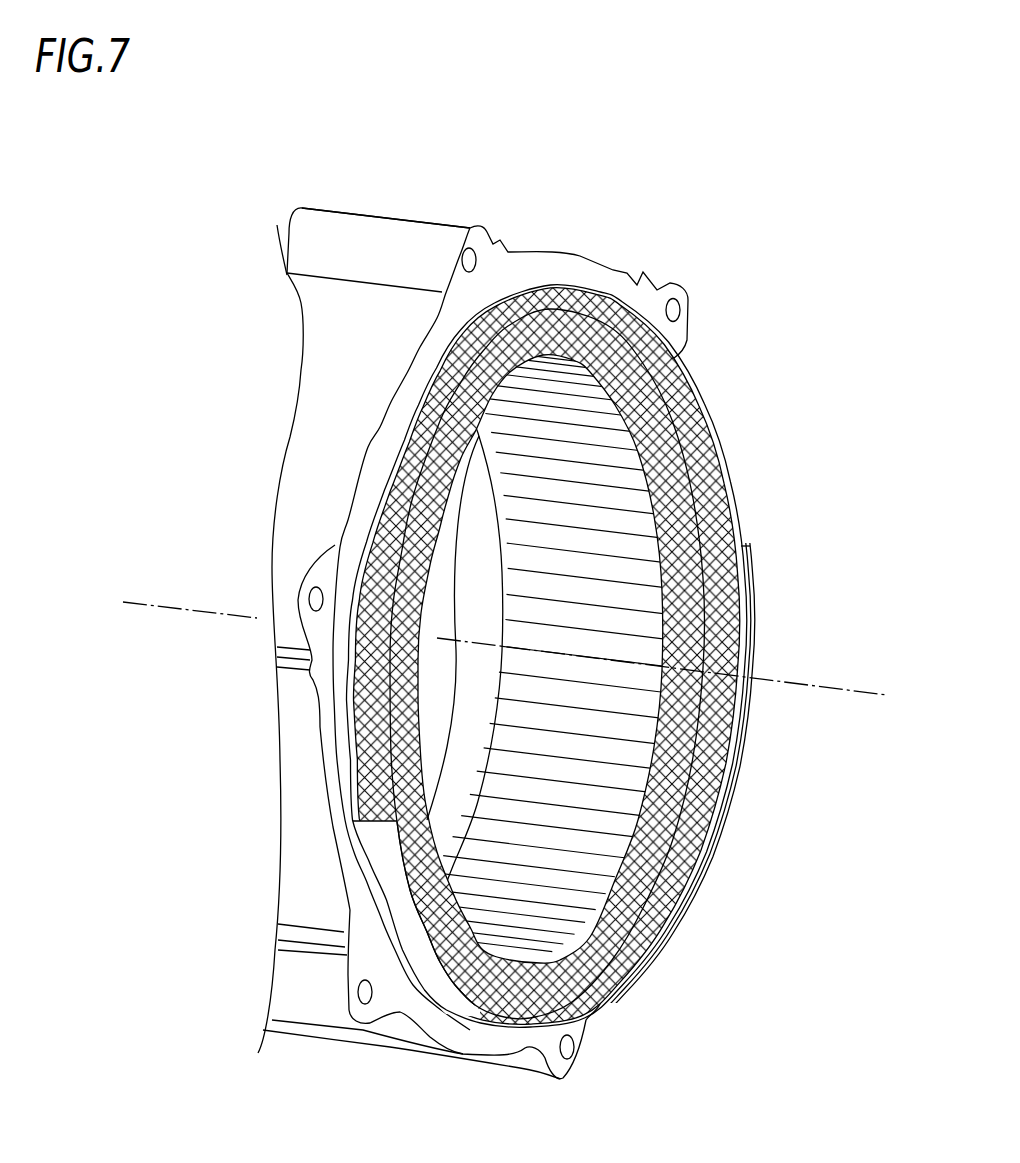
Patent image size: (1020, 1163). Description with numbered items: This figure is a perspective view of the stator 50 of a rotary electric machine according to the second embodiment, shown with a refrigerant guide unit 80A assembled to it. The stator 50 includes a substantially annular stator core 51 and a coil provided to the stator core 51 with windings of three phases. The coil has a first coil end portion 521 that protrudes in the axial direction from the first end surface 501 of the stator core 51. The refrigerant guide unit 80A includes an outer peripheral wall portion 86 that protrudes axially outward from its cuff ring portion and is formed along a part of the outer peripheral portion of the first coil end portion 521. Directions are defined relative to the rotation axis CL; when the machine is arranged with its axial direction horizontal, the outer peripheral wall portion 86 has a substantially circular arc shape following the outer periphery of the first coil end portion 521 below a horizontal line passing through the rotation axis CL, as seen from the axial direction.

The stator 50 is at (434, 208).
The stator core 51 is at (333, 257).
The first end surface 501 is at (553, 272).
The first coil end portion 521 is at (717, 422).
The refrigerant guide unit 80A is at (373, 838).
The outer peripheral wall portion 86 is at (435, 983).
The rotation axis CL is at (799, 685).